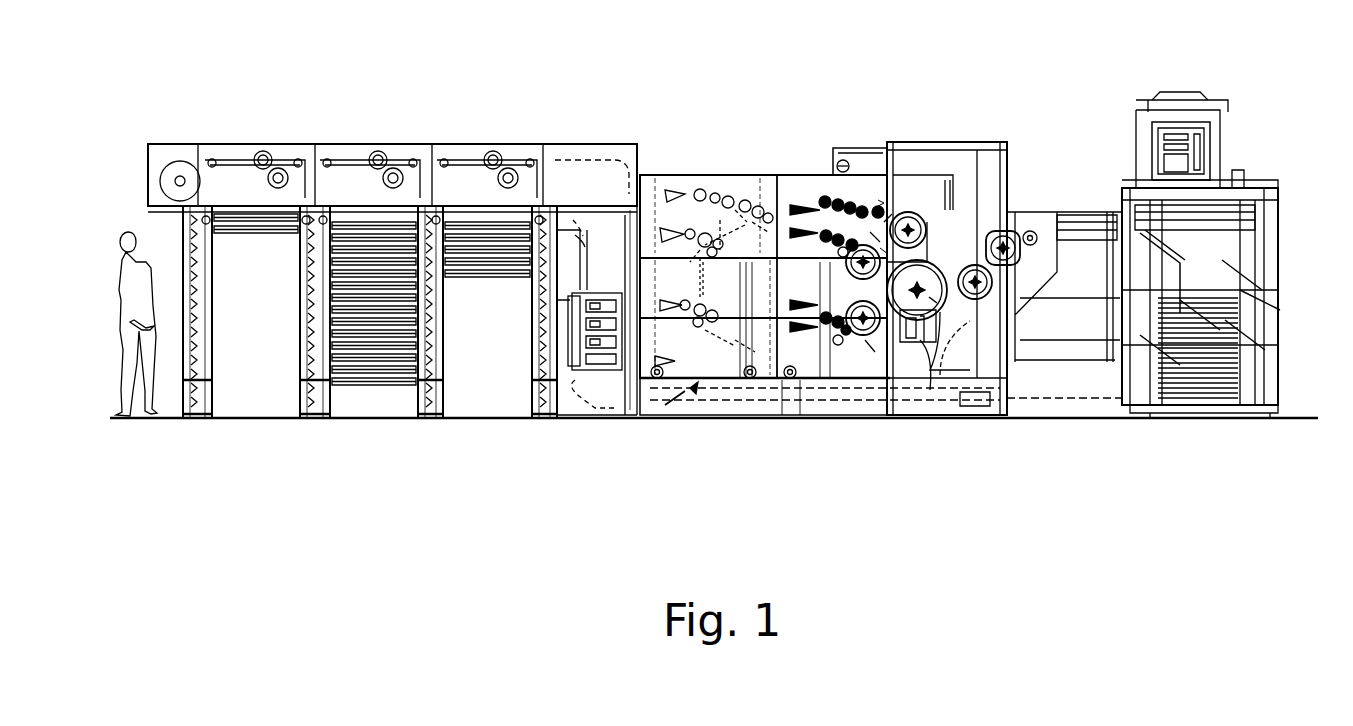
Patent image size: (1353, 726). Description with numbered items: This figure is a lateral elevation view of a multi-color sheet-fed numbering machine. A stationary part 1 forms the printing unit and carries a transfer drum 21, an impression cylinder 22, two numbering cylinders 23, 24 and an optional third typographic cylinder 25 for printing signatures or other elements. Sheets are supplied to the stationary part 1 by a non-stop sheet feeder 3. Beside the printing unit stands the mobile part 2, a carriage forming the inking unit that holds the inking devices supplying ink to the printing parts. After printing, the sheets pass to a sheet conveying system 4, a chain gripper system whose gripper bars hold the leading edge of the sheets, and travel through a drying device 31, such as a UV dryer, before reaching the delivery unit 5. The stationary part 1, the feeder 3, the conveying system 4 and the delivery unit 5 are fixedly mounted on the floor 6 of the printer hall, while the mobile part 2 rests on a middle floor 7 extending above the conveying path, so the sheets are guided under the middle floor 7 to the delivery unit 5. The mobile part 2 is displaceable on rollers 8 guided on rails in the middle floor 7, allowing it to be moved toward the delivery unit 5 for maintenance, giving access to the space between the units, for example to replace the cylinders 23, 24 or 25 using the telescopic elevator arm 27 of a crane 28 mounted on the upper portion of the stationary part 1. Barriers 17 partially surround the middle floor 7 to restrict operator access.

The stationary part 1 is at (939, 140).
The mobile part 2 is at (788, 158).
The non-stop sheet feeder 3 is at (1218, 170).
The sheet conveying system 4 is at (683, 402).
The delivery unit 5 is at (416, 138).
The floor 6 is at (481, 420).
The middle floor 7 is at (727, 380).
The rollers 8 is at (802, 382).
The barriers 17 is at (680, 258).
The transfer drum 21 is at (977, 298).
The impression cylinder 22 is at (940, 330).
The numbering cylinder 23 is at (866, 338).
The numbering cylinder 24 is at (900, 268).
The typographic cylinder 25 is at (910, 226).
The telescopic elevator arm 27 is at (835, 166).
The crane 28 is at (866, 150).
The drying device 31 is at (588, 380).